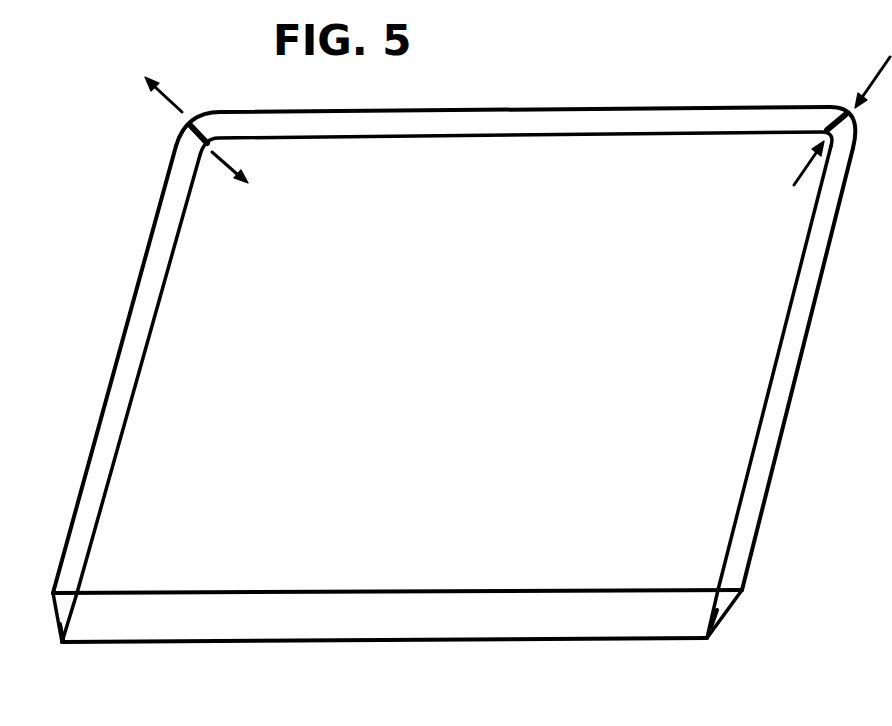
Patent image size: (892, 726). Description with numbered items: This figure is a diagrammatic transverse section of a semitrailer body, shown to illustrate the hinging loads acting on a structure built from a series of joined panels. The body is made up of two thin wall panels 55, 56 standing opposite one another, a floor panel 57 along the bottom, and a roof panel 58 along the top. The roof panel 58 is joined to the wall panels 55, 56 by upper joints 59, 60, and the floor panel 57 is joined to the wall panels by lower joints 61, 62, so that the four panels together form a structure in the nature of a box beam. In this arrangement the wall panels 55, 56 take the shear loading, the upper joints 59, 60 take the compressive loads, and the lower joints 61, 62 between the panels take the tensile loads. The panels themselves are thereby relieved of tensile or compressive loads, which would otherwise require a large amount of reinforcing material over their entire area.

The wall panel 55 is at (775, 432).
The wall panel 56 is at (117, 400).
The floor panel 57 is at (420, 627).
The roof panel 58 is at (532, 113).
The upper joint 59 is at (200, 117).
The upper joint 60 is at (830, 107).
The lower joint 61 is at (58, 640).
The lower joint 62 is at (708, 640).